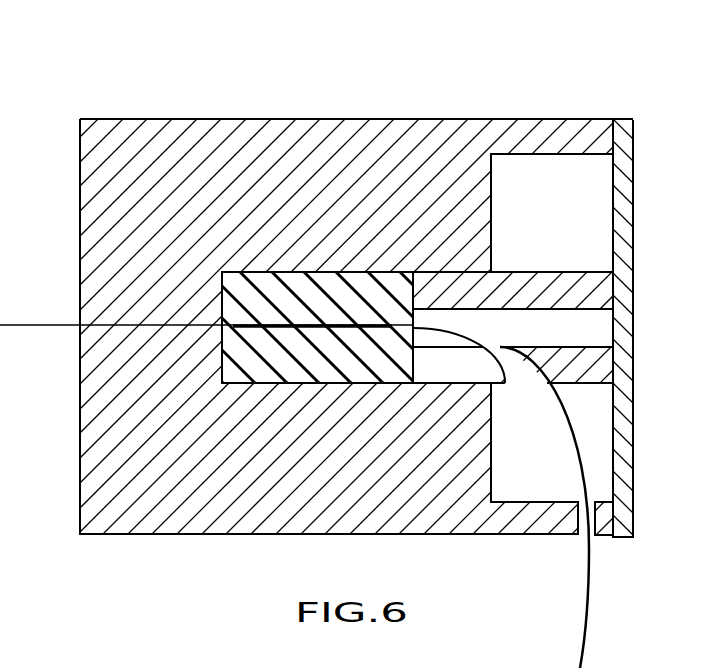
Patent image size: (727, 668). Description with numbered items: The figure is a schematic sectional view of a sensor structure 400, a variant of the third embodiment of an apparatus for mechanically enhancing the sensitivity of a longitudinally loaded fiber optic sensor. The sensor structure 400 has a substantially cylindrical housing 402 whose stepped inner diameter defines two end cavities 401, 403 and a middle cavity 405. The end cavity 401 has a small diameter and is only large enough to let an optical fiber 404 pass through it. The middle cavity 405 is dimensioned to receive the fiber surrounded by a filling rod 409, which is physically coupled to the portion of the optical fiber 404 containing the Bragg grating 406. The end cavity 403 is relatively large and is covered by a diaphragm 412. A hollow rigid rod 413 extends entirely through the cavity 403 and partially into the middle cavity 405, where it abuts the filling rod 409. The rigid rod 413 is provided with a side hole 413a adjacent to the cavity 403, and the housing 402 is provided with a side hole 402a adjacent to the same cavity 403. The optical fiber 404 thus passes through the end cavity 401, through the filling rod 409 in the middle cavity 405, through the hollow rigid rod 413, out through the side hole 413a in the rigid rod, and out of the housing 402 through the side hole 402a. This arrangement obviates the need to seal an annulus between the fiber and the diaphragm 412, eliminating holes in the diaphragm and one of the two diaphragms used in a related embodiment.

The sensor structure 400 is at (128, 56).
The end cavity 401 is at (107, 325).
The housing 402 is at (332, 118).
The side hole 402a is at (602, 520).
The end cavity 403 is at (593, 175).
The optical fiber 404 is at (587, 633).
The middle cavity 405 is at (260, 382).
The Bragg grating 406 is at (377, 325).
The filling rod 409 is at (267, 275).
The diaphragm 412 is at (640, 215).
The hollow rigid rod 413 is at (587, 297).
The side hole 413a is at (537, 375).